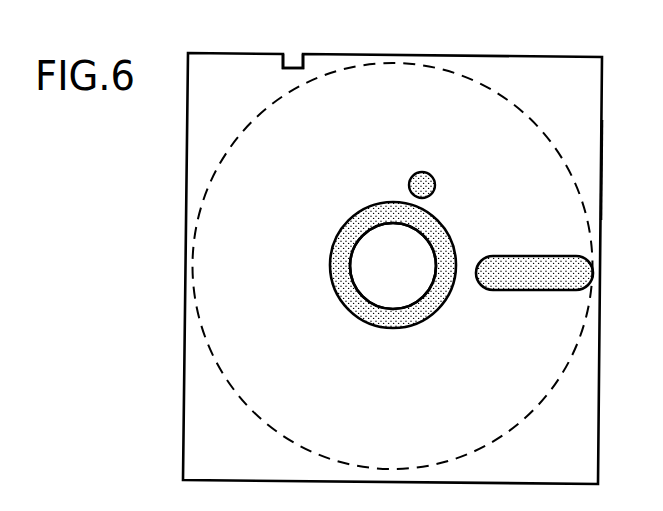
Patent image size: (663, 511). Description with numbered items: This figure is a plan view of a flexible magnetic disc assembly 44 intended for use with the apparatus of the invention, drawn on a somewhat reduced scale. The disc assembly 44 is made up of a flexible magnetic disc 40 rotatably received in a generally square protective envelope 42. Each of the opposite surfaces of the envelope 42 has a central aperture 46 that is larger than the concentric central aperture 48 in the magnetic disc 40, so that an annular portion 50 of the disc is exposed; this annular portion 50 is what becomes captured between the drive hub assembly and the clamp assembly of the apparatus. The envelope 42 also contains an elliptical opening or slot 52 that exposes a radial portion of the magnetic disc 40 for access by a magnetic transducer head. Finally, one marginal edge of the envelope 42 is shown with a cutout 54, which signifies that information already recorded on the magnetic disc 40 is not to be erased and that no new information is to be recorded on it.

The magnetic disc 40 is at (252, 118).
The envelope 42 is at (187, 138).
The disc assembly 44 is at (611, 163).
The central aperture 46 is at (428, 313).
The central aperture 48 is at (385, 307).
The annular portion 50 is at (447, 240).
The slot 52 is at (527, 258).
The cutout 54 is at (287, 53).